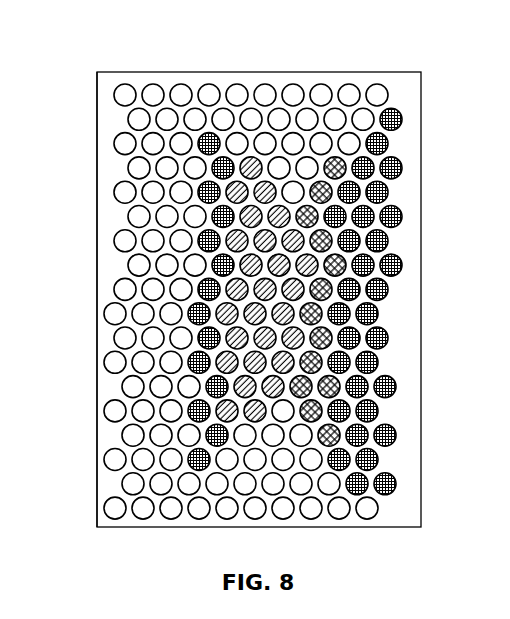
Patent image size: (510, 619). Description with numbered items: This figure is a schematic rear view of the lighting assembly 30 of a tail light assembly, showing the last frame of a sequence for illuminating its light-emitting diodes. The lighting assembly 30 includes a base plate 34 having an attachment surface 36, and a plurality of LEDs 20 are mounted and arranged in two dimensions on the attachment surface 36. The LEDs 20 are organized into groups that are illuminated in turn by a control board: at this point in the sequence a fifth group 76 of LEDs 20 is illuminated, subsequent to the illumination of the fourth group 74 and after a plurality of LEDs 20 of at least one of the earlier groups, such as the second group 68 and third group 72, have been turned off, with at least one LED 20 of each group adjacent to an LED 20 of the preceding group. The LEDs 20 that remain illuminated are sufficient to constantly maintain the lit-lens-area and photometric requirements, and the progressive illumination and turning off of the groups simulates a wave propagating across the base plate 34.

The light-emitting diodes 20 is at (242, 117).
The lighting assembly 30 is at (80, 161).
The base plate 34 is at (97, 121).
The attachment surface 36 is at (112, 440).
The second group 68 is at (235, 196).
The third group 72 is at (292, 196).
The fourth group 74 is at (346, 149).
The fifth group 76 is at (402, 100).